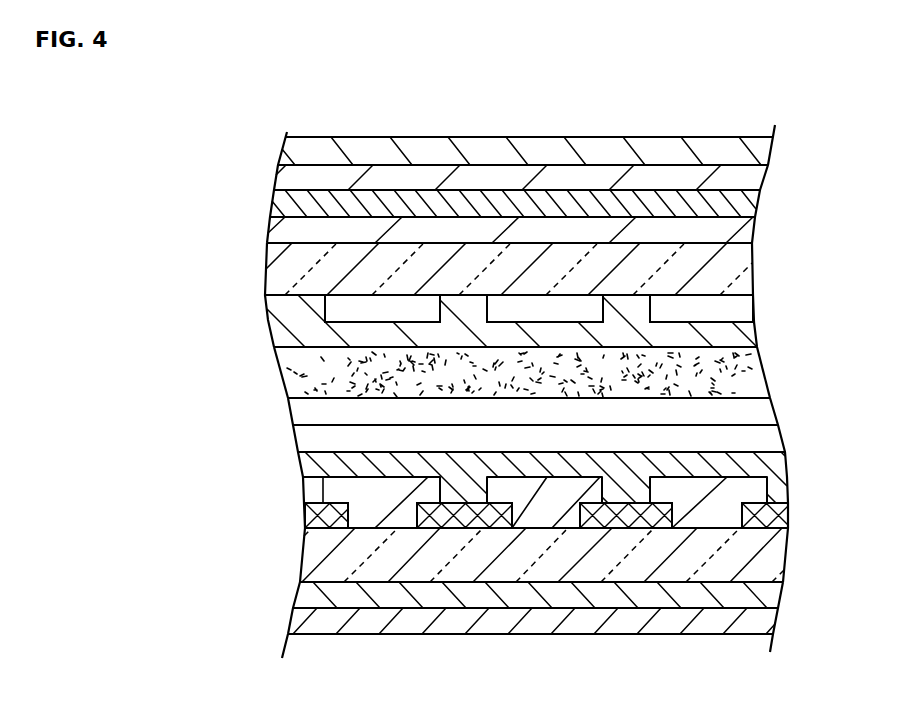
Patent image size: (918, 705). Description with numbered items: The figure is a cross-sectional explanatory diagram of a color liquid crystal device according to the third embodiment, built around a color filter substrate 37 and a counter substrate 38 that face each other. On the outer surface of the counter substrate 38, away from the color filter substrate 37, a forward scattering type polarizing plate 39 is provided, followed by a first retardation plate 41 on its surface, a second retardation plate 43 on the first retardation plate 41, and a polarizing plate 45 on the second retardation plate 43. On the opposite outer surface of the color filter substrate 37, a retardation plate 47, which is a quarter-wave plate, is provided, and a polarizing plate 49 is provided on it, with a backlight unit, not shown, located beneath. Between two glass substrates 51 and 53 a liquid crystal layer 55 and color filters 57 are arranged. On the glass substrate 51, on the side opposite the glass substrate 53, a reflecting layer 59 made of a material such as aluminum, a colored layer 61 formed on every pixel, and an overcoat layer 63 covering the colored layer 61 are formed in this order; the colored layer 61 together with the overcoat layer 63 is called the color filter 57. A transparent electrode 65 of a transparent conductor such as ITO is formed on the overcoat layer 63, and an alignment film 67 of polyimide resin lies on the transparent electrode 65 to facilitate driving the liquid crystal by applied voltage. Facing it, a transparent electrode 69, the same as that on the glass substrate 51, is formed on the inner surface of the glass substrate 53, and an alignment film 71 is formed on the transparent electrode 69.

The color filter substrate 37 is at (794, 402).
The counter substrate 38 is at (758, 232).
The forward scattering type polarizing plate 39 is at (757, 232).
The first retardation plate 41 is at (757, 208).
The second retardation plate 43 is at (762, 180).
The polarizing plate 45 is at (762, 152).
The retardation plate 47 is at (786, 588).
The polarizing plate 49 is at (786, 617).
The glass substrate 51 is at (478, 557).
The glass substrate 53 is at (454, 269).
The liquid crystal layer 55 is at (461, 377).
The color filter 57 is at (207, 460).
The reflecting layer 59 is at (478, 521).
The colored layer 61 is at (470, 502).
The overcoat layer 63 is at (500, 477).
The transparent electrode 65 is at (470, 442).
The alignment film 67 is at (490, 413).
The transparent electrode 69 is at (472, 310).
The alignment film 71 is at (456, 327).